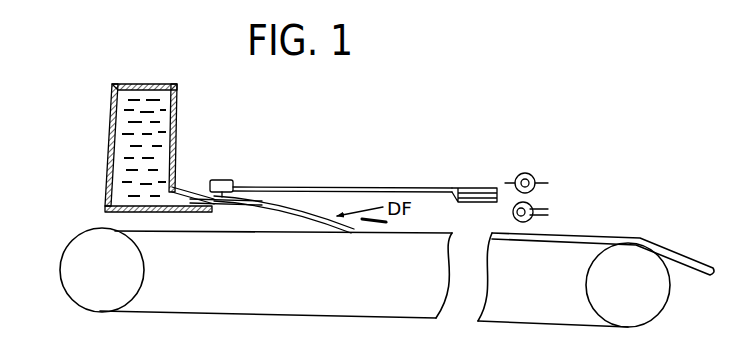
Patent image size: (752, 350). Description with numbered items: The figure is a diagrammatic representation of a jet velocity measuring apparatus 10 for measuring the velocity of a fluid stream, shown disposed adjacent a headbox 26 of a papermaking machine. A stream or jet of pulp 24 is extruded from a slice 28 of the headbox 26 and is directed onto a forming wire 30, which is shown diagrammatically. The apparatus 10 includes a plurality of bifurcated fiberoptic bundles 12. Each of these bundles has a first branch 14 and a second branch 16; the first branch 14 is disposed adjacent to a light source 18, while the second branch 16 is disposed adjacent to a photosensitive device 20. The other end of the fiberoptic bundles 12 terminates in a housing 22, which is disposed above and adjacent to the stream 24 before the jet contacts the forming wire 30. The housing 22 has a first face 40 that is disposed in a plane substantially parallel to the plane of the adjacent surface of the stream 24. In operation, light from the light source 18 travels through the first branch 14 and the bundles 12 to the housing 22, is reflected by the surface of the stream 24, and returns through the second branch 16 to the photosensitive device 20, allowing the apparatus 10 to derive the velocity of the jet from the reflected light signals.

The jet velocity measuring apparatus 10 is at (405, 176).
The bifurcated fiberoptic bundles 12 is at (470, 178).
The first branch 14 is at (476, 203).
The second branch 16 is at (493, 183).
The light source 18 is at (536, 225).
The photosensitive device 20 is at (548, 173).
The housing 22 is at (227, 176).
The stream or jet of pulp 24 is at (303, 201).
The headbox 26 is at (110, 168).
The slice 28 is at (195, 213).
The forming wire 30 is at (317, 236).
The first face 40 is at (262, 206).